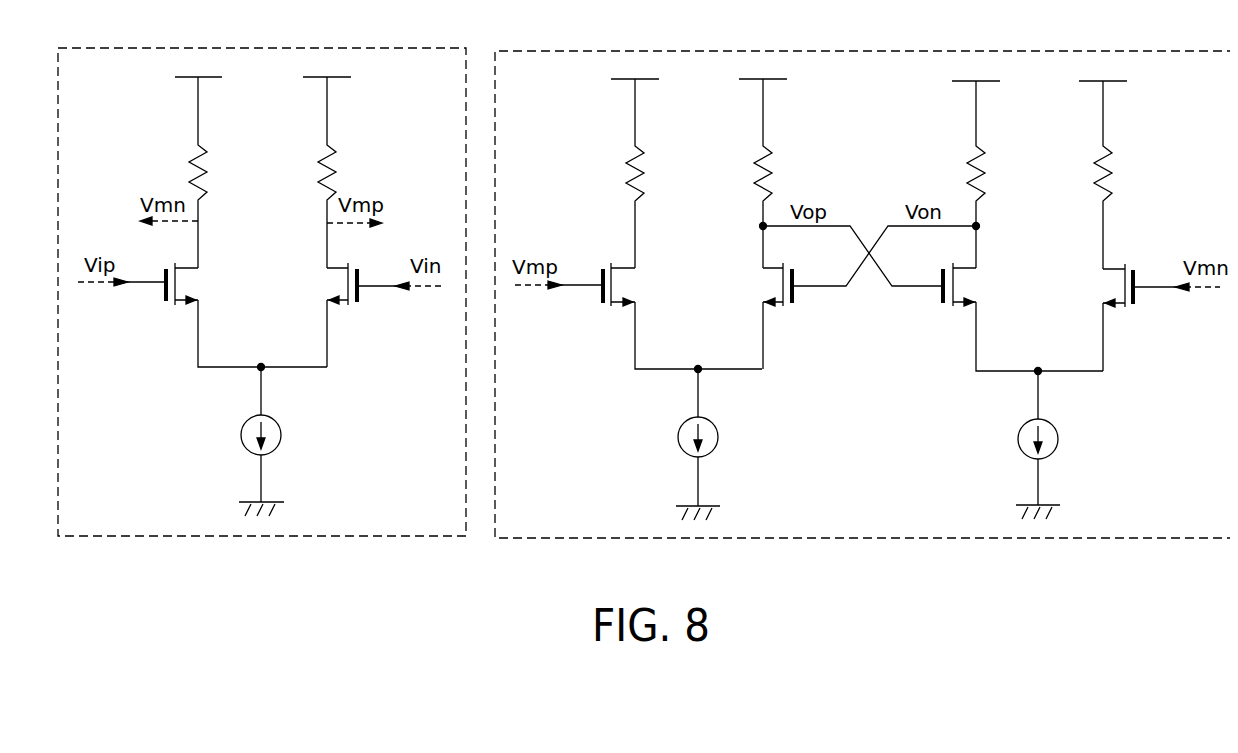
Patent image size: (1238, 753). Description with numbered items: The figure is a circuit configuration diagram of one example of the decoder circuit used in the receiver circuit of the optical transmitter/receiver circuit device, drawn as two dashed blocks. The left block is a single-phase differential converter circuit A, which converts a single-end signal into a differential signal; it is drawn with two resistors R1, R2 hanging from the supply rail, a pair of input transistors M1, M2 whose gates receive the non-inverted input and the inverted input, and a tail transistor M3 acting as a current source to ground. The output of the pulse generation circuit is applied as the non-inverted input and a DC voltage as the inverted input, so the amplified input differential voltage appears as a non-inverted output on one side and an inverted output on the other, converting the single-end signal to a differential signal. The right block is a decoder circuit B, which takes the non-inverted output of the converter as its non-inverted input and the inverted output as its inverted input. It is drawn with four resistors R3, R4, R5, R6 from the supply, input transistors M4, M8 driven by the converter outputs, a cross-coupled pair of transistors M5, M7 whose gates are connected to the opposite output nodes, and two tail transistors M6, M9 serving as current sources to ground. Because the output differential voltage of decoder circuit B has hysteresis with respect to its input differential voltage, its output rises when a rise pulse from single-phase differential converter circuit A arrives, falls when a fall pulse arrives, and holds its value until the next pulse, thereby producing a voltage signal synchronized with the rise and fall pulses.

The single-phase differential converter circuit A is at (262, 274).
The decoder circuit B is at (862, 278).
The load resistor R1 is at (190, 172).
The load resistor R2 is at (334, 172).
The load resistor R3 is at (628, 173).
The load resistor R4 is at (769, 173).
The load resistor R5 is at (968, 174).
The load resistor R6 is at (1109, 175).
The input transistor M1 is at (235, 315).
The input transistor M2 is at (356, 315).
The tail current source transistor M3 is at (245, 440).
The input transistor M4 is at (671, 316).
The cross-coupled transistor M5 is at (789, 296).
The tail current source transistor M6 is at (681, 443).
The cross-coupled transistor M7 is at (1011, 297).
The input transistor M8 is at (1131, 317).
The tail current source transistor M9 is at (1022, 444).